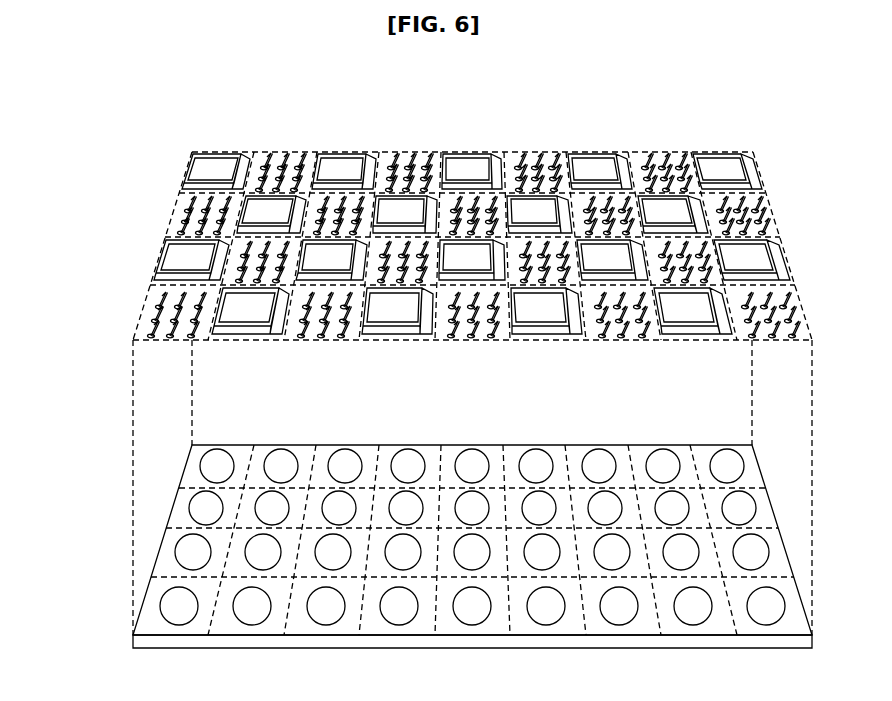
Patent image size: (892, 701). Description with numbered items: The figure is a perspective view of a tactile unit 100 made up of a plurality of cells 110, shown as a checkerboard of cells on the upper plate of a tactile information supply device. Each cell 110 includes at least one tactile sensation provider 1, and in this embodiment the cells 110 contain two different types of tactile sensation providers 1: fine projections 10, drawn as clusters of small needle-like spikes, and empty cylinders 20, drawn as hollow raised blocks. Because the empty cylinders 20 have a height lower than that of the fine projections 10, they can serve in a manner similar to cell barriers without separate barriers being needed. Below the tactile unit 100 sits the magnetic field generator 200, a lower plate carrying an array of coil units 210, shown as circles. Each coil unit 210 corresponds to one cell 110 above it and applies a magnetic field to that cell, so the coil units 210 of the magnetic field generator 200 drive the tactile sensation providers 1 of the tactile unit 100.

The tactile sensation provider 1 is at (420, 350).
The fine projections 10 is at (662, 150).
The empty cylinders 20 is at (733, 167).
The tactile unit 100 is at (421, 357).
The cell 110 is at (710, 341).
The magnetic field generator 200 is at (419, 546).
The coil unit 210 is at (193, 550).